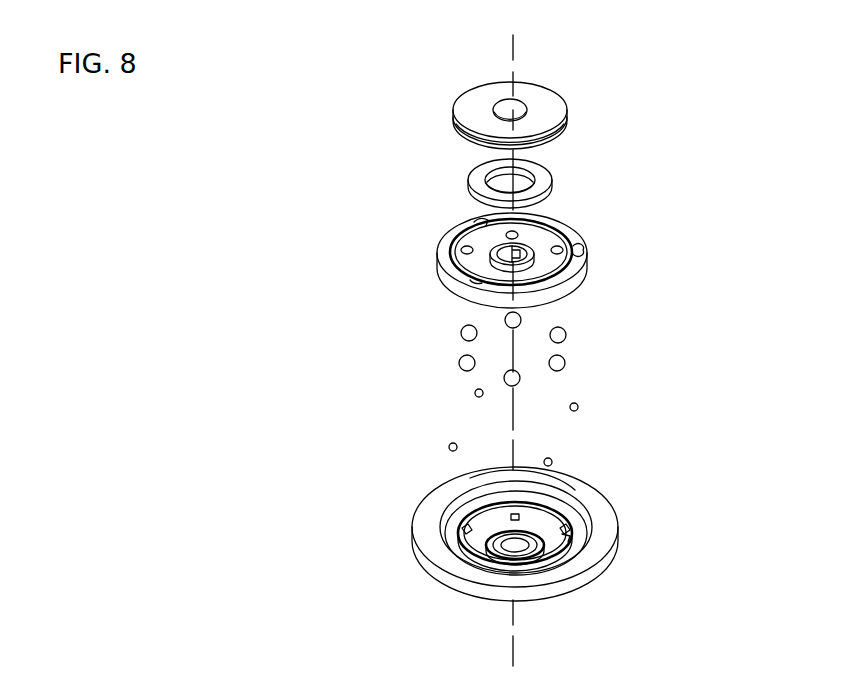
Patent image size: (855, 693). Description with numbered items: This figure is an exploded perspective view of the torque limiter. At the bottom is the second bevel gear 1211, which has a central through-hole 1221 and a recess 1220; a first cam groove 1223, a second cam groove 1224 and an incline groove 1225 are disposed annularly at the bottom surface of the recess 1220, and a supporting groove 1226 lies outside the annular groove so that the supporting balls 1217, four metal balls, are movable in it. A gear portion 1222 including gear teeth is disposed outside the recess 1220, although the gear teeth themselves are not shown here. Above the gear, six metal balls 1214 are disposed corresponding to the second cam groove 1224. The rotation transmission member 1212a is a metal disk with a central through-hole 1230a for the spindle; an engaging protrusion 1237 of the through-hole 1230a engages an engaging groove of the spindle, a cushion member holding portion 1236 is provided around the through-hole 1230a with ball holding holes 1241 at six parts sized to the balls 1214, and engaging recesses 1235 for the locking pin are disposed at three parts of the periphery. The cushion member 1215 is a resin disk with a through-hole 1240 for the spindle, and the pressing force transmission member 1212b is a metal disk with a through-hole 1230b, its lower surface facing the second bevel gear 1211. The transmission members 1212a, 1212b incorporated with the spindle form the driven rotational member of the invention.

The second bevel gear 1211 is at (610, 555).
The rotation transmission member 1212a is at (587, 275).
The pressing force transmission member 1212b is at (550, 113).
The ball 1214 is at (560, 360).
The cushion member 1215 is at (538, 170).
The supporting ball 1217 is at (577, 406).
The recess 1220 is at (550, 497).
The through-hole 1221 is at (487, 540).
The gear portion 1222 is at (430, 507).
The first cam groove 1223 is at (485, 522).
The second cam groove 1224 is at (568, 536).
The incline groove 1225 is at (566, 528).
The supporting groove 1226 is at (448, 528).
The through-hole 1230a is at (518, 250).
The through-hole 1230b is at (519, 103).
The engaging recess 1235 is at (578, 248).
The cushion member holding portion 1236 is at (444, 258).
The engaging protrusion 1237 is at (527, 264).
The through-hole 1240 is at (500, 180).
The ball holding holes 1241 is at (467, 248).